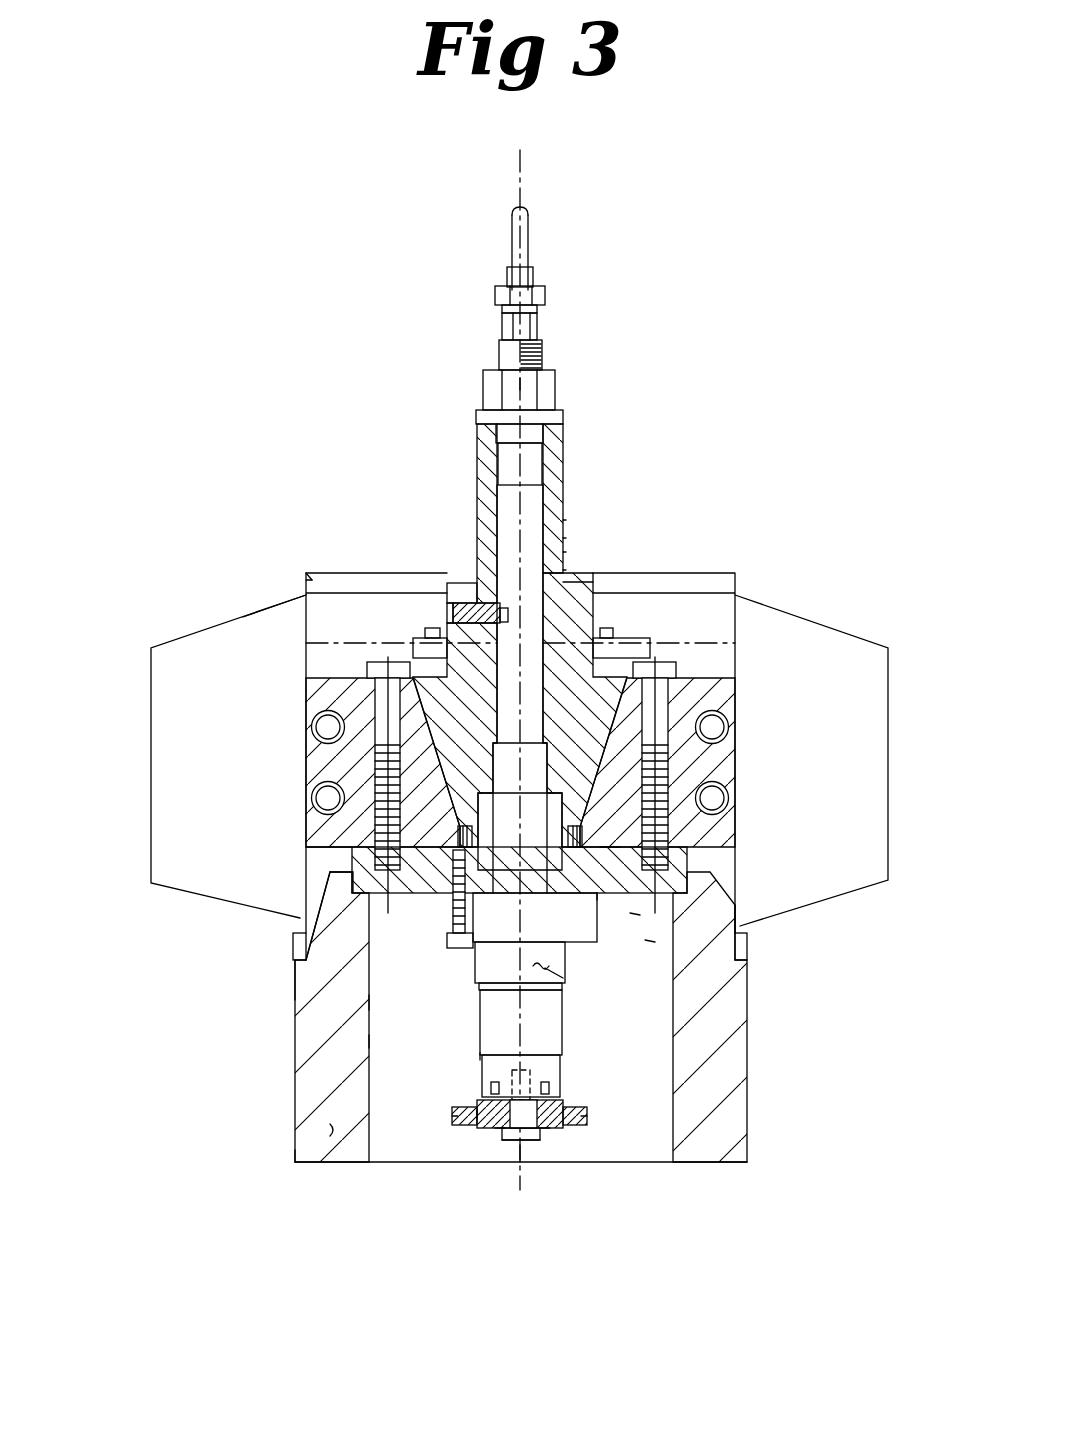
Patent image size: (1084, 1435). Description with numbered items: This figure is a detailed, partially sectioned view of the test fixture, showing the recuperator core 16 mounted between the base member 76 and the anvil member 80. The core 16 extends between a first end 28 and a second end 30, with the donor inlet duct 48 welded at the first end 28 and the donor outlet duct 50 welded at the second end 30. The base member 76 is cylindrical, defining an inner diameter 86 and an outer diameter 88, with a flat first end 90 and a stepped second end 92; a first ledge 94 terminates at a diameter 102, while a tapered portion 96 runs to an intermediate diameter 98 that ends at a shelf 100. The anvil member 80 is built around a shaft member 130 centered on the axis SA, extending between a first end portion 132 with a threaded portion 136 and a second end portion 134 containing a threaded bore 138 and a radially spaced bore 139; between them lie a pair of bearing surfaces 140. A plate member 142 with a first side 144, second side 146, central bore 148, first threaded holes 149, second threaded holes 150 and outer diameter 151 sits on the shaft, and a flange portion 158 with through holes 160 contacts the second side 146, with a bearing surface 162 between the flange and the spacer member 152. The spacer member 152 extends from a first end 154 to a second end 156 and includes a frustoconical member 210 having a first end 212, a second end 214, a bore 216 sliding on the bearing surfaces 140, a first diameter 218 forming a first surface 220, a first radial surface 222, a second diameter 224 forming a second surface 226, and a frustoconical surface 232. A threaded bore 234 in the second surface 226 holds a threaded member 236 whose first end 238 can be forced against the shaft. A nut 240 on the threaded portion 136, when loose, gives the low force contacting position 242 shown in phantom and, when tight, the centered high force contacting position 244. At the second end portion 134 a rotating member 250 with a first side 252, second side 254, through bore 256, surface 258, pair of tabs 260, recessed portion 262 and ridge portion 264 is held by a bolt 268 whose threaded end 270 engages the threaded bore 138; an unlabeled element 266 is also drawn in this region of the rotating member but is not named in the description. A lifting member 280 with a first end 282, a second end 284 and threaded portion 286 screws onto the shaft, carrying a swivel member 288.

The core 16 is at (243, 612).
The first end 28 is at (304, 574).
The second end 30 is at (737, 930).
The donor inlet duct 48 is at (304, 581).
The donor outlet duct 50 is at (745, 948).
The base member 76 is at (330, 1135).
The anvil member 80 is at (563, 430).
The inner diameter 86 is at (371, 1145).
The outer diameter 88 is at (368, 1003).
The first end 90 is at (298, 1163).
The second end 92 is at (340, 862).
The first ledge 94 is at (373, 843).
The tapered portion 96 is at (315, 915).
The intermediate diameter 98 is at (293, 940).
The shelf 100 is at (296, 964).
The diameter 102 is at (390, 866).
The shaft member 130 is at (565, 488).
The first end portion 132 is at (542, 350).
The second end portion 134 is at (538, 1140).
The threaded portion 136 is at (499, 352).
The threaded bore 138 is at (565, 1105).
The bore 139 is at (480, 1060).
The pair of bearing surfaces 140 is at (565, 460).
The plate member 142 is at (620, 897).
The first side 144 is at (618, 835).
The second side 146 is at (640, 913).
The bore 148 is at (650, 940).
The plurality of first threaded holes 149 is at (658, 886).
The plurality of second threaded holes 150 is at (368, 1040).
The outer diameter 151 is at (688, 858).
The spacer member 152 is at (476, 417).
The first end 154 is at (483, 385).
The second end 156 is at (580, 828).
The flange portion 158 is at (490, 931).
The plurality of radially spaced through holes 160 is at (455, 935).
The bearing surface 162 is at (563, 1067).
The frustoconical member 210 is at (735, 594).
The first end 212 is at (615, 640).
The second end 214 is at (458, 828).
The bore 216 is at (565, 523).
The first diameter 218 is at (565, 540).
The first surface 220 is at (565, 553).
The first radial surface 222 is at (570, 572).
The second diameter 224 is at (600, 574).
The second surface 226 is at (455, 614).
The frustoconical surface 232 is at (622, 696).
The threaded bore 234 is at (462, 606).
The threaded member 236 is at (447, 625).
The first end 238 is at (497, 505).
The nut 240 is at (557, 383).
The low force contacting position 242 is at (306, 643).
The high force contacting position 244 is at (414, 650).
The rotating member 250 is at (500, 1138).
The first side 252 is at (548, 1140).
The second side 254 is at (482, 1092).
The through bore 256 is at (512, 1150).
The surface 258 is at (482, 1130).
The pair of tabs 260 is at (470, 1125).
The recessed portion 262 is at (588, 1115).
The ridge portion 264 is at (511, 1080).
The key 266 is at (491, 1090).
The bolt 268 is at (525, 1165).
The threaded end 270 is at (562, 1080).
The lifting member 280 is at (512, 240).
The first end 282 is at (507, 276).
The second end 284 is at (502, 310).
The threaded portion 286 is at (545, 318).
The swivel member 288 is at (516, 207).
The axis SA is at (522, 178).